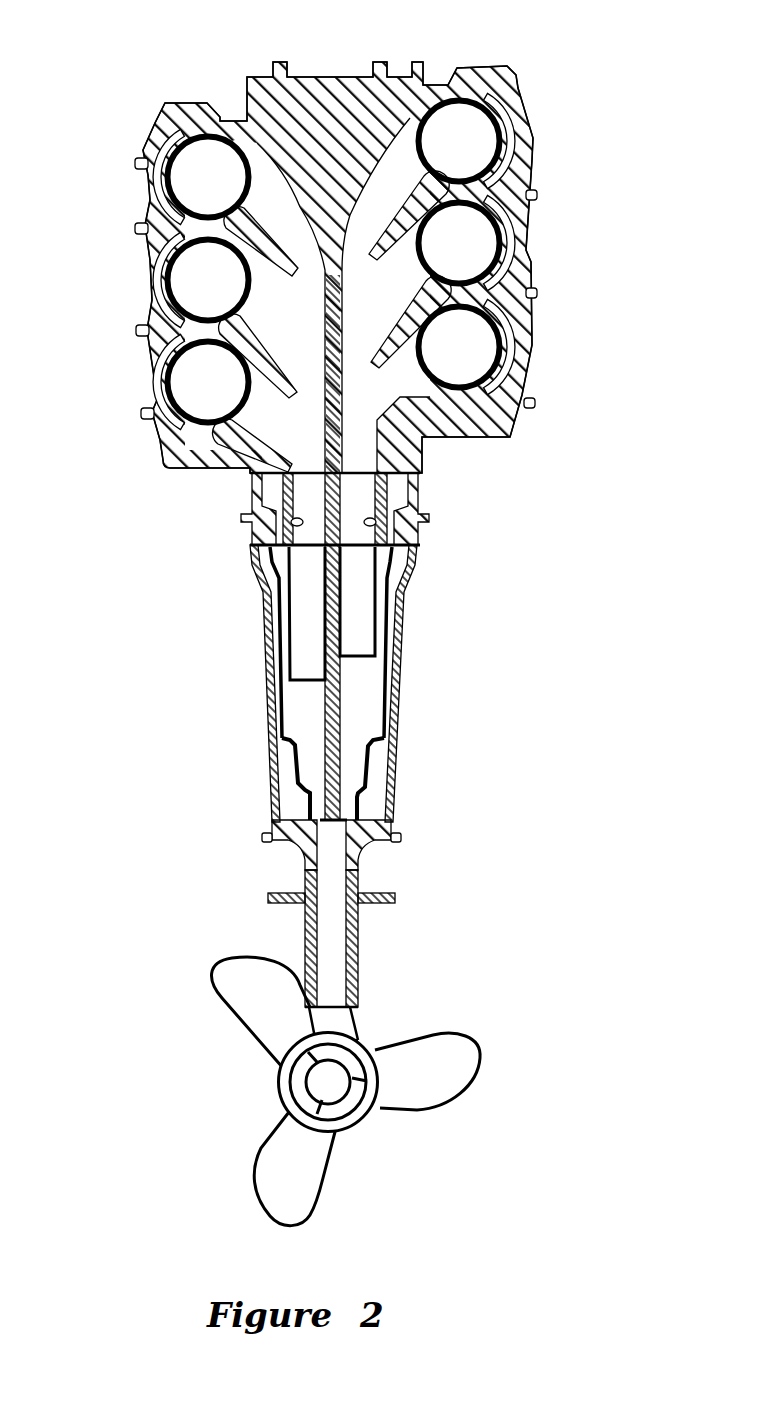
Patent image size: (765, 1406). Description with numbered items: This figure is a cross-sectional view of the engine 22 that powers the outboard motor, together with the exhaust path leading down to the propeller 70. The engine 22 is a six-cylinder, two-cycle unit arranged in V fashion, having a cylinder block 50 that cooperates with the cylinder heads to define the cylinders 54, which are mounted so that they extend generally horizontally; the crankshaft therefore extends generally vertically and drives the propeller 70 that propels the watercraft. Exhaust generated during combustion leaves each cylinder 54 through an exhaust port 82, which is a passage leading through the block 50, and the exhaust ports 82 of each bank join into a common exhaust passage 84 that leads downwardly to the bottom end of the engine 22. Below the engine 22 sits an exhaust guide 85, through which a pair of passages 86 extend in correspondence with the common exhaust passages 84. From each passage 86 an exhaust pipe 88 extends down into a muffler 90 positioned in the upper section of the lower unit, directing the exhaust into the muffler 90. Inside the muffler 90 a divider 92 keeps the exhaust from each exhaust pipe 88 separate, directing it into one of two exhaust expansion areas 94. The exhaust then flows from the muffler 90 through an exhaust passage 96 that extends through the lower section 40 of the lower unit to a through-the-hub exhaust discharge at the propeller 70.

The engine 22 is at (552, 188).
The lower section of the lower unit 40 is at (357, 970).
The cylinder block 50 is at (142, 262).
The cylinders 54 is at (178, 192).
The propeller 70 is at (433, 1033).
The exhaust port 82 is at (277, 383).
The common exhaust passage 84 is at (300, 442).
The exhaust guide 85 is at (425, 511).
The passages 86 is at (285, 538).
The exhaust pipe 88 is at (288, 632).
The muffler 90 is at (400, 700).
The divider 92 is at (340, 737).
The exhaust expansion areas 94 is at (312, 768).
The exhaust passage 96 is at (323, 937).